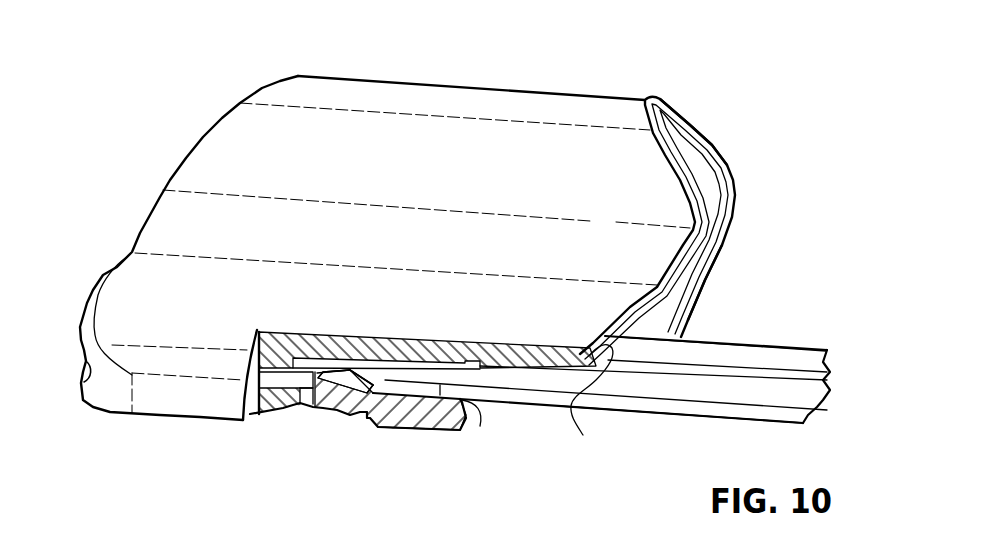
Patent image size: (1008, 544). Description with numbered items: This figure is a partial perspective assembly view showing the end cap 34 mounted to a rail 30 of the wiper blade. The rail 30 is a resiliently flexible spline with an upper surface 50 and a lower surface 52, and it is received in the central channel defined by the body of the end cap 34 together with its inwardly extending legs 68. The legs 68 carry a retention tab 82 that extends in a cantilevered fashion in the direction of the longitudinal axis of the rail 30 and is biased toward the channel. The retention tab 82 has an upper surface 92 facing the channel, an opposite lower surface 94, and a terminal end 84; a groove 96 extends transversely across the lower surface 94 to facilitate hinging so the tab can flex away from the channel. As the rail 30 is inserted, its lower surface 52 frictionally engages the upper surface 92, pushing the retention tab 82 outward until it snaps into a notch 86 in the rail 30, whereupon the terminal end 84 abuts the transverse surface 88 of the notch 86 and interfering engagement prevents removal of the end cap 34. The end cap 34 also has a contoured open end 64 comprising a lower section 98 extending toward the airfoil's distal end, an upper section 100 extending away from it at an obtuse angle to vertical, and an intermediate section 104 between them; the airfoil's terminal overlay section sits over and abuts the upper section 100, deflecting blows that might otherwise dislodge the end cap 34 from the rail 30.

The end cap 34 is at (137, 152).
The inwardly extending legs 68 is at (95, 290).
The surface of the notch 88 is at (297, 365).
The upper surface of the retention tab 92 is at (353, 372).
The notch 86 is at (387, 377).
The upper section of the open end 100 is at (683, 115).
The open end 64 is at (751, 152).
The intermediate section 104 is at (710, 277).
The rail 30 is at (807, 343).
The upper surface of the rail 50 is at (728, 353).
The lower section of the open end 98 is at (592, 400).
The lower surface of the rail 52 is at (657, 414).
The terminal end of the retention tab 84 is at (317, 408).
The groove 96 is at (368, 420).
The retention tab 82 is at (380, 433).
The lower surface of the retention tab 94 is at (433, 432).